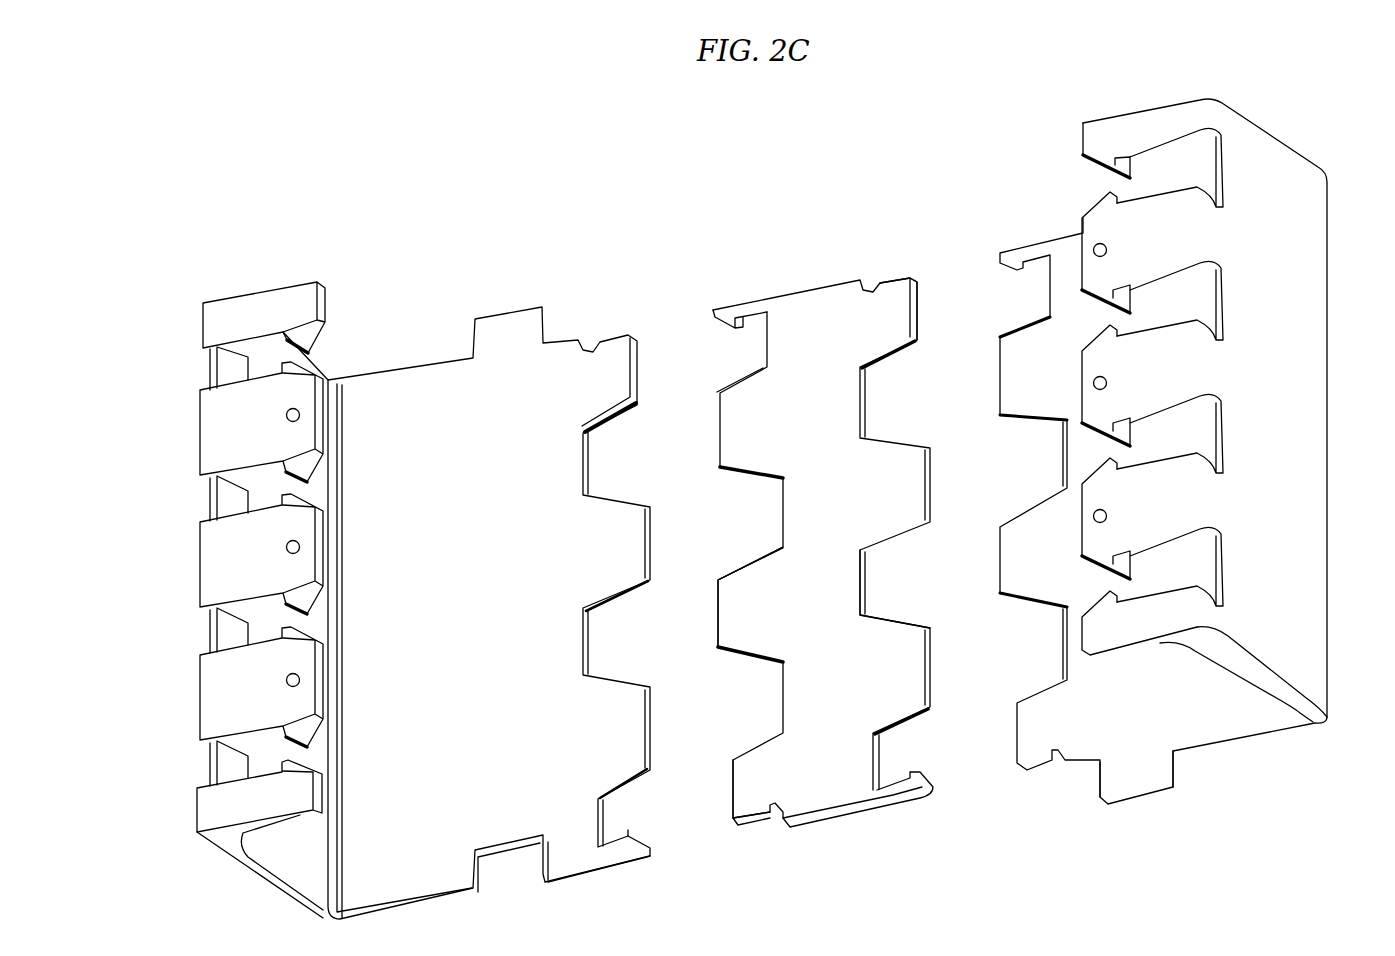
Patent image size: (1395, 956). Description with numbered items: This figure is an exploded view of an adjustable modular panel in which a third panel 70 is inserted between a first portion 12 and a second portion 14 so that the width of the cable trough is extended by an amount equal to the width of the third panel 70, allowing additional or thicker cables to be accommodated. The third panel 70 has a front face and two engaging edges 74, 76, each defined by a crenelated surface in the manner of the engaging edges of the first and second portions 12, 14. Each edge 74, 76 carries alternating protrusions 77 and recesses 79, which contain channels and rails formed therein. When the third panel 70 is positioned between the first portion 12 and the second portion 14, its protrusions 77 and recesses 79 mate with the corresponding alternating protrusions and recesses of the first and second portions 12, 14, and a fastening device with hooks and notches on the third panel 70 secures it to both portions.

The first portion 12 is at (408, 368).
The second portion 14 is at (1193, 235).
The third panel 70 is at (790, 310).
The engaging edge 74 is at (917, 296).
The engaging edge 76 is at (725, 813).
The protrusion 77 is at (747, 605).
The recess 79 is at (877, 580).